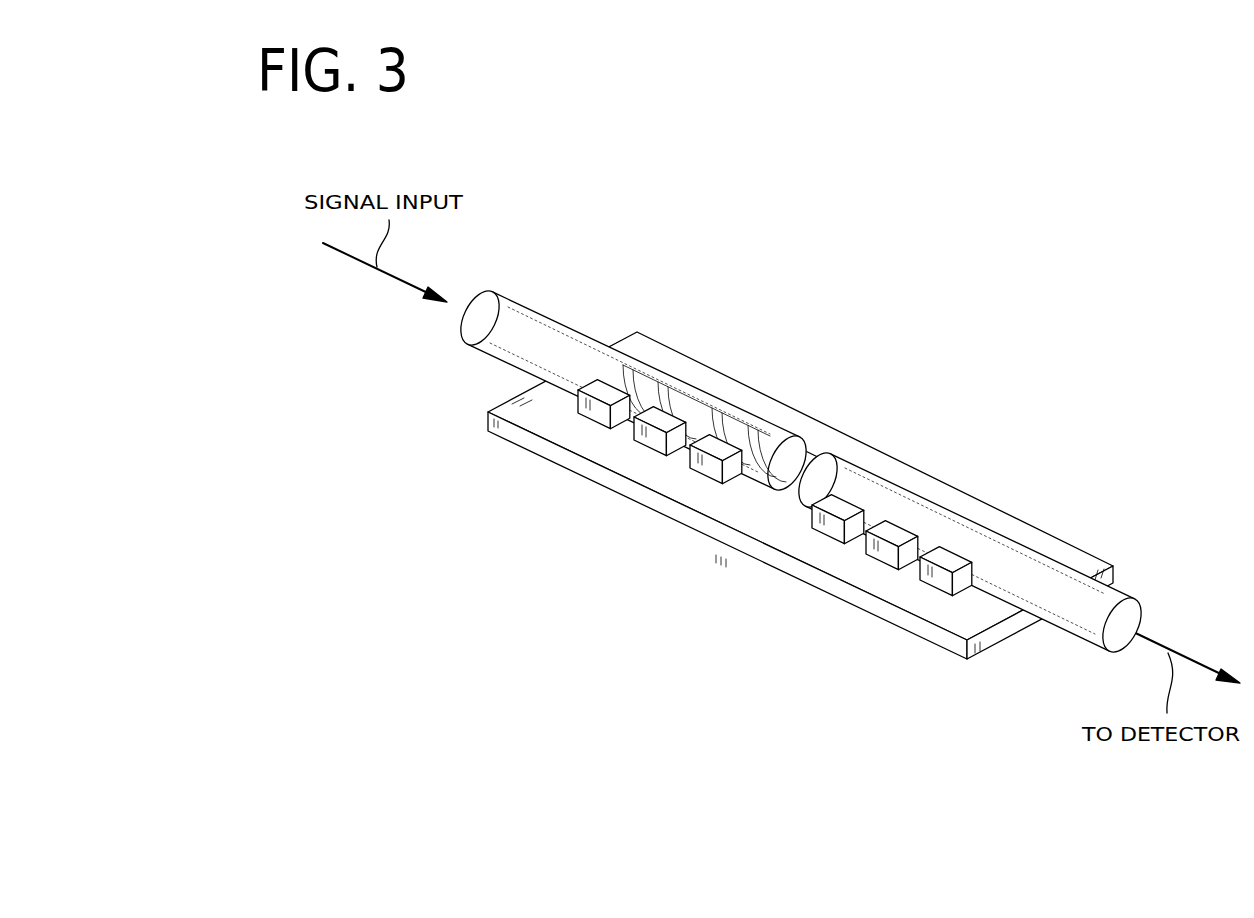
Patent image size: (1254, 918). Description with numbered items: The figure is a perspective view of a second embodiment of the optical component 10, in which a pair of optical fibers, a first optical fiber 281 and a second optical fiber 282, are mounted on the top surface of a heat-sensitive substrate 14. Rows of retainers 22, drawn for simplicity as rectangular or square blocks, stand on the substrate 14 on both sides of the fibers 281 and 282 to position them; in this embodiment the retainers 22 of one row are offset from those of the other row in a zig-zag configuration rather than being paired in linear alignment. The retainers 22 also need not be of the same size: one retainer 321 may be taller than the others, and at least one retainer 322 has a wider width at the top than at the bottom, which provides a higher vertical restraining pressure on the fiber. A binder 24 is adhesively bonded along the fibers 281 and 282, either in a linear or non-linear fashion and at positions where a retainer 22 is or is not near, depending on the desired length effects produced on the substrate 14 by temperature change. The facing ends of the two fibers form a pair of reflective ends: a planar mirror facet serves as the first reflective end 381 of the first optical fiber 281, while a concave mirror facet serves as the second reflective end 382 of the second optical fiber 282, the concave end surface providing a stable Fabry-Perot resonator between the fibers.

The optical component 10 is at (1136, 240).
The heat-sensitive substrate 14 is at (947, 640).
The retainers 22 is at (588, 416).
The binder 24 is at (625, 425).
The first optical fiber 281 is at (537, 330).
The second optical fiber 282 is at (1108, 600).
The retainer 321 is at (700, 393).
The retainer 322 is at (928, 565).
The first reflective end 381 is at (789, 434).
The second reflective end 382 is at (825, 455).